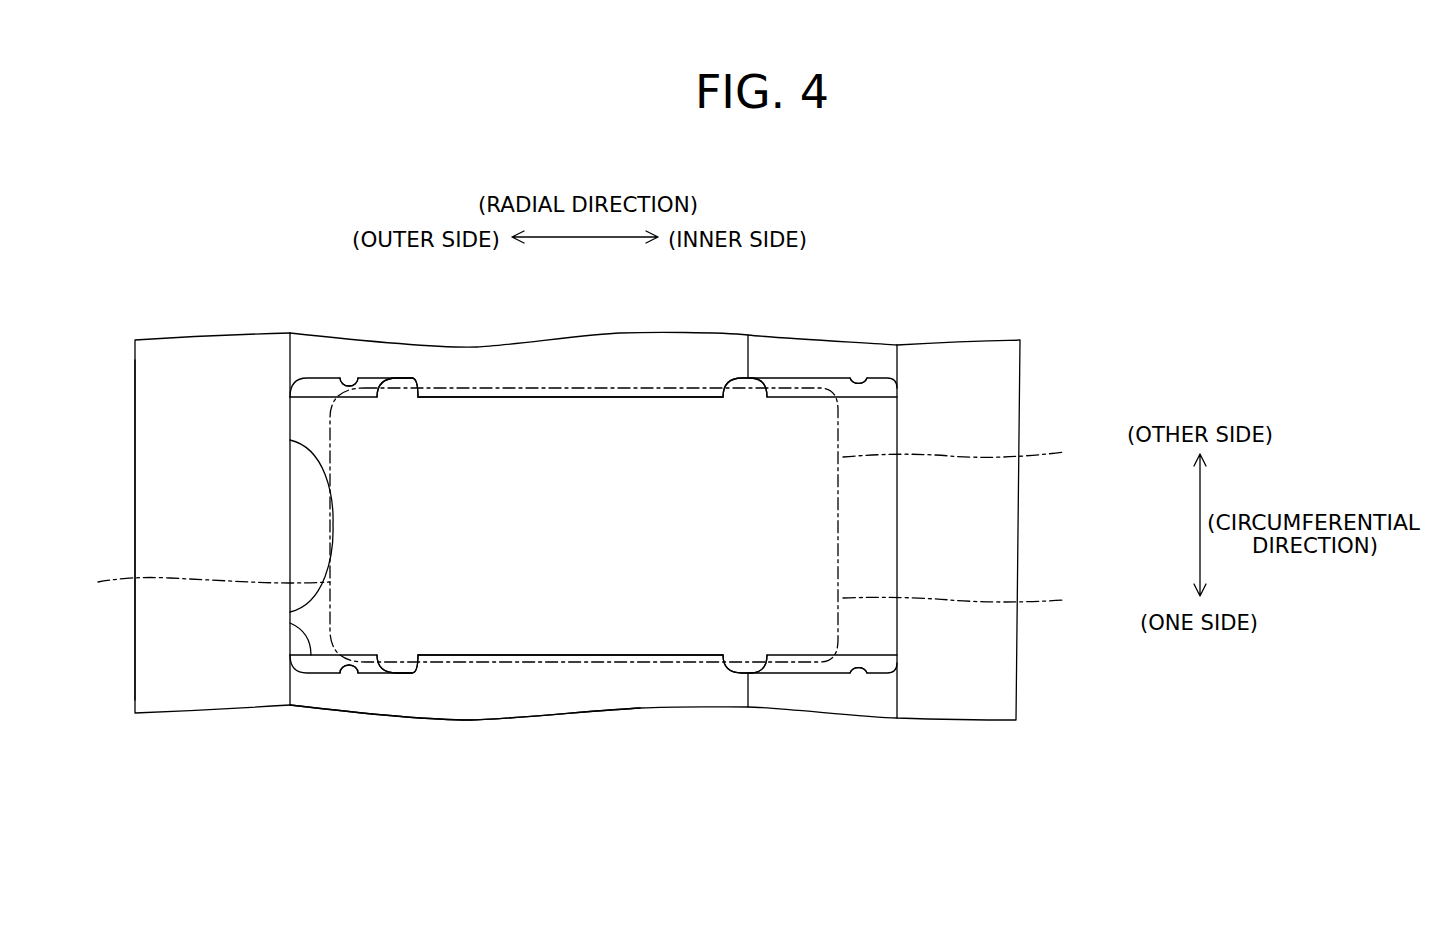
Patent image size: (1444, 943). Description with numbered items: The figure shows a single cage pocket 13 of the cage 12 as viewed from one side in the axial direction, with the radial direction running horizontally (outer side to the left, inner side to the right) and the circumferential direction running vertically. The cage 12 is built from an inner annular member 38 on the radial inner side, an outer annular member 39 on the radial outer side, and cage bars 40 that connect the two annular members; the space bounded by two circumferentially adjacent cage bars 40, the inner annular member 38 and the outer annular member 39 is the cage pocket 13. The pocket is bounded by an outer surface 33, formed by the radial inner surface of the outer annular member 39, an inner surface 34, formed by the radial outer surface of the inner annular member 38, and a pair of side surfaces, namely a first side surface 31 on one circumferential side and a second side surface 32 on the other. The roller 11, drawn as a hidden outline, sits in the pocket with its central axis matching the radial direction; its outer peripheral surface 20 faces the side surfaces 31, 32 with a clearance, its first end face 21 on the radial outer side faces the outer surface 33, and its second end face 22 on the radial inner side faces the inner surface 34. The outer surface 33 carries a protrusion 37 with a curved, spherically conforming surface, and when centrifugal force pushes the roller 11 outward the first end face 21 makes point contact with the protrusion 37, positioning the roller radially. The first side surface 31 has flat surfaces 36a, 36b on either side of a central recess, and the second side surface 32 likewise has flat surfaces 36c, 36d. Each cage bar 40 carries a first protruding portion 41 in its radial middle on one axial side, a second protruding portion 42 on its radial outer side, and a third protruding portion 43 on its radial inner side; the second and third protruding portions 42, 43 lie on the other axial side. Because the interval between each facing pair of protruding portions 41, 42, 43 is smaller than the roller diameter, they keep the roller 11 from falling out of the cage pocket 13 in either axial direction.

The roller 11 is at (971, 453).
The cage 12 is at (116, 533).
The cage pocket 13 is at (302, 424).
The outer peripheral surface 20 is at (480, 672).
The first end face 21 is at (199, 583).
The second end face 22 is at (971, 601).
The first side surface 31 is at (797, 657).
The second side surface 32 is at (796, 397).
The outer surface 33 is at (312, 655).
The inner surface 34 is at (900, 560).
The flat surface 36a is at (357, 673).
The flat surface 36b is at (848, 673).
The flat surface 36c is at (357, 378).
The flat surface 36d is at (850, 378).
The protrusion 37 is at (335, 522).
The inner annular member 38 is at (1003, 492).
The outer annular member 39 is at (140, 462).
The cage bar 40 is at (569, 355).
The first protruding portion 41 is at (680, 398).
The second protruding portion 42 is at (362, 398).
The third protruding portion 43 is at (793, 395).